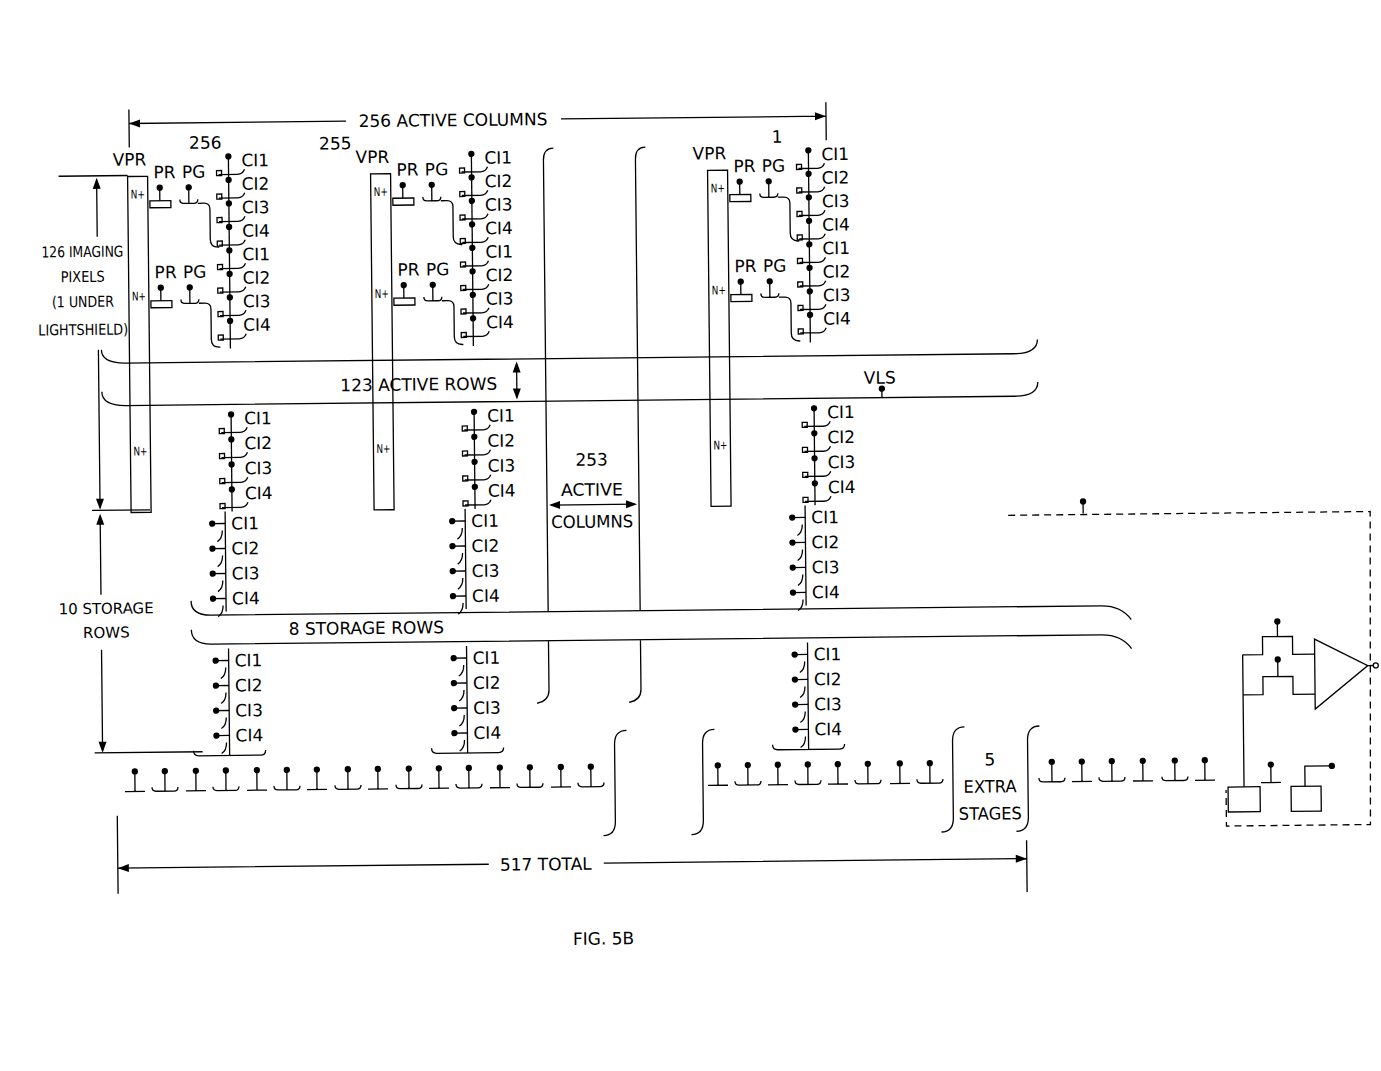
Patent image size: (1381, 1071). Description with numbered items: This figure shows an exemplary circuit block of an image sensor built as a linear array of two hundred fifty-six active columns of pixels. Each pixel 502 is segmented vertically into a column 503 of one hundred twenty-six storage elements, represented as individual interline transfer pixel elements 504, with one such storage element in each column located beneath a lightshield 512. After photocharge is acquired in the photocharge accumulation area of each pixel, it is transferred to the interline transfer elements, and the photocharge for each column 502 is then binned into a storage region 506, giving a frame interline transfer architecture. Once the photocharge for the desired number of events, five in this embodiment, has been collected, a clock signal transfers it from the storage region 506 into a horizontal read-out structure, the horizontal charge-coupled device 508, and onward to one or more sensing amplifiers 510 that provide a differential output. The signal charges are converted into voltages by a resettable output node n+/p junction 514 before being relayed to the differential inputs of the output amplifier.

The pixel 502 is at (886, 208).
The column 503 is at (158, 146).
The interline transfer pixel elements 504 is at (170, 474).
The storage region 506 is at (658, 782).
The horizontal charge-coupled device 508 is at (367, 828).
The sensing amplifiers 510 is at (1298, 633).
The lightshield 512 is at (1186, 557).
The resettable output node n+/p junction 514 is at (1240, 819).